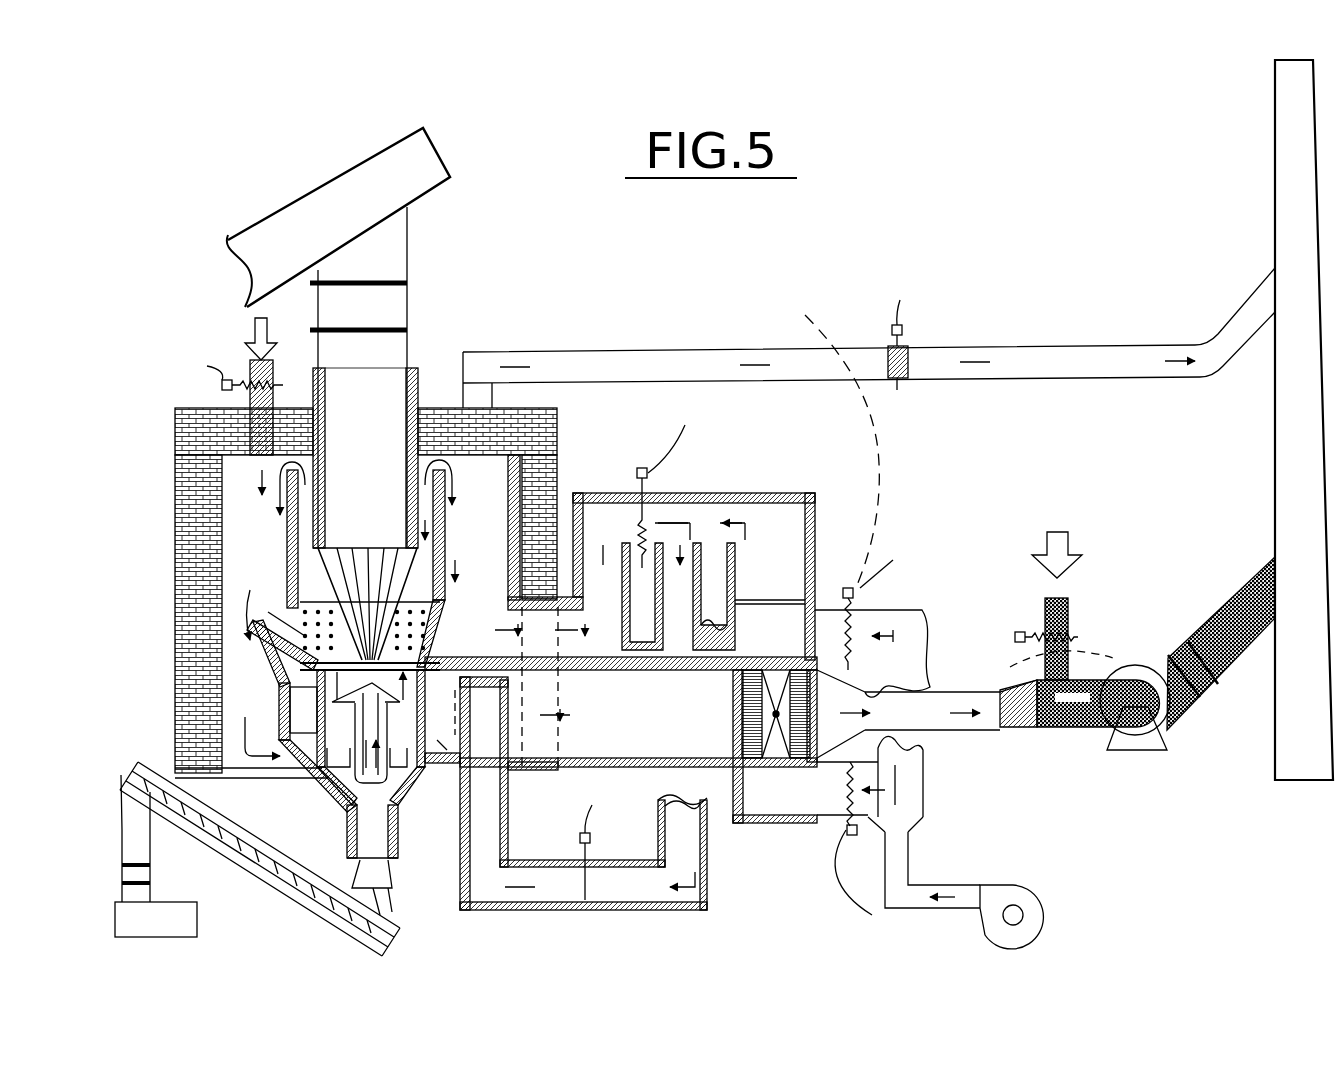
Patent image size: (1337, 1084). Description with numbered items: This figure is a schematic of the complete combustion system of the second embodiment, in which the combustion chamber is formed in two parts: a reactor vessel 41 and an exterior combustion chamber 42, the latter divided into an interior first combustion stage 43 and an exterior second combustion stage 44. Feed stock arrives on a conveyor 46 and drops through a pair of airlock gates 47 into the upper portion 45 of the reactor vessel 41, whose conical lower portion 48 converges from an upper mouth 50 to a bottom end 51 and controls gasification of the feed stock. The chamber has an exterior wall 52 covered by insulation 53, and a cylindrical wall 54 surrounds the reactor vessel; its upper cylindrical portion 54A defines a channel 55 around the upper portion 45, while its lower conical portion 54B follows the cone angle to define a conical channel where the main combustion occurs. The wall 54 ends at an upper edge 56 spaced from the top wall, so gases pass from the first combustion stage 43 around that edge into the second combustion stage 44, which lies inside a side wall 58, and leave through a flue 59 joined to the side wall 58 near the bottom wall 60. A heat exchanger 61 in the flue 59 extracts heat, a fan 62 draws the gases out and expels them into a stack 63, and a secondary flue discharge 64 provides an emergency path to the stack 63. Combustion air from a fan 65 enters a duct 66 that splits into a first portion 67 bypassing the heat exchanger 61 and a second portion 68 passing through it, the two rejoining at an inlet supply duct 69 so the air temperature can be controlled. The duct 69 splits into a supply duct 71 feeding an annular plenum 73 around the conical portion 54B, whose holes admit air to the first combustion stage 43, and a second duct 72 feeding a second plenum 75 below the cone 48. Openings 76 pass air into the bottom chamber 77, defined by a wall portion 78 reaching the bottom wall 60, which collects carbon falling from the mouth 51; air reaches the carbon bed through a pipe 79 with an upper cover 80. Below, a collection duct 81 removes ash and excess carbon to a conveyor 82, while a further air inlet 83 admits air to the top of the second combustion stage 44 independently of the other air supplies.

The reactor vessel 41 is at (433, 362).
The exterior combustion chamber 42 is at (497, 518).
The first combustion stage 43 is at (313, 577).
The second combustion stage 44 is at (250, 468).
The upper portion 45 is at (413, 398).
The conveyor 46 is at (362, 175).
The airlock gates 47 is at (408, 328).
The conical lower portion 48 is at (355, 590).
The upper mouth 50 is at (338, 527).
The bottom end 51 is at (394, 550).
The exterior wall 52 is at (505, 445).
The insulation 53 is at (540, 427).
The cylindrical wall 54 is at (448, 540).
The upper cylindrical portion 54A is at (438, 458).
The lower conical portion 54B is at (446, 575).
The channel 55 is at (312, 498).
The upper edge 56 is at (436, 458).
The side wall 58 is at (210, 580).
The flue 59 is at (628, 672).
The bottom wall 60 is at (283, 778).
The heat exchanger 61 is at (742, 706).
The fan 62 is at (1135, 700).
The stack 63 is at (1280, 408).
The secondary flue discharge 64 is at (775, 370).
The fan 65 is at (1033, 900).
The duct 66 is at (940, 783).
The first portion 67 is at (1020, 630).
The second portion 68 is at (832, 817).
The inlet supply duct 69 is at (776, 493).
The supply duct 71 is at (615, 540).
The second duct 72 is at (678, 597).
The annular plenum 73 is at (279, 688).
The second plenum 75 is at (303, 723).
The openings 76 is at (432, 762).
The bottom chamber 77 is at (337, 713).
The wall portion 78 is at (432, 720).
The pipe 79 is at (397, 853).
The upper cover 80 is at (350, 795).
The collection duct 81 is at (398, 905).
The conveyor 82 is at (258, 878).
The air inlet 83 is at (252, 385).